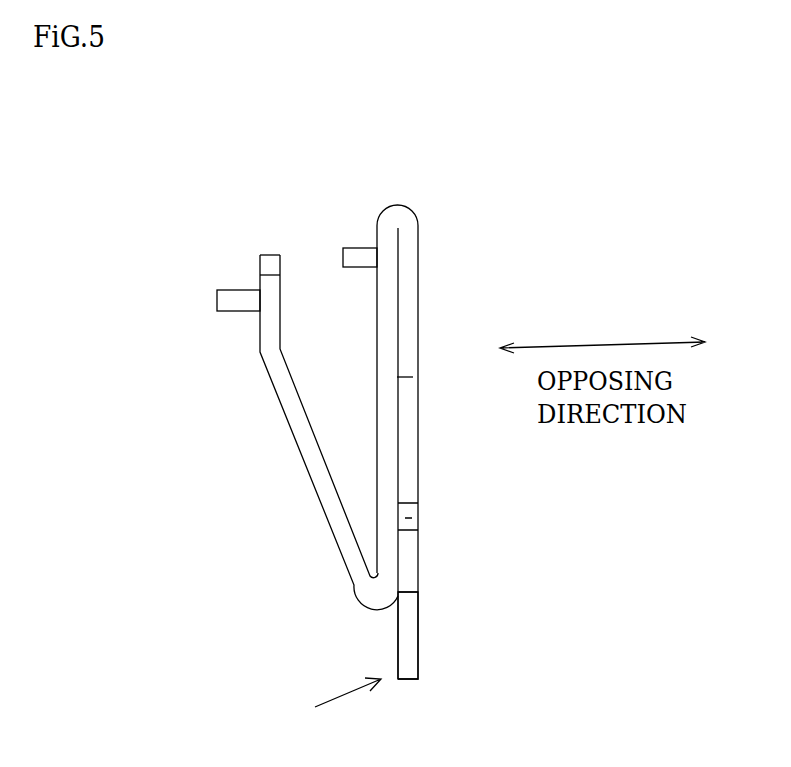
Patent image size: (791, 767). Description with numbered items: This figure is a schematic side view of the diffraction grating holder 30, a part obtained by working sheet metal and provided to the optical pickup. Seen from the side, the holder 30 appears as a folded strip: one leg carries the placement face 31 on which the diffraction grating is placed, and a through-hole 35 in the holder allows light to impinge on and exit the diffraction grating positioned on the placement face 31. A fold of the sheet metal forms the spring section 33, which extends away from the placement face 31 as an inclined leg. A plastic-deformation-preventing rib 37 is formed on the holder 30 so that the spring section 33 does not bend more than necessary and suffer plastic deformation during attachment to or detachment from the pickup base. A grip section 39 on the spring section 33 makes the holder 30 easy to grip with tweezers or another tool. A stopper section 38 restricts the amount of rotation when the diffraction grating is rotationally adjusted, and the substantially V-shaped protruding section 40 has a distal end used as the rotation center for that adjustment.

The diffraction grating holder 30 is at (447, 168).
The placement face 31 is at (398, 628).
The spring section 33 is at (282, 387).
The through-hole 35 is at (406, 377).
The plastic-deformation-preventing rib 37 is at (352, 257).
The stopper section 38 is at (408, 557).
The grip section 39 is at (227, 302).
The protruding section 40 is at (331, 708).